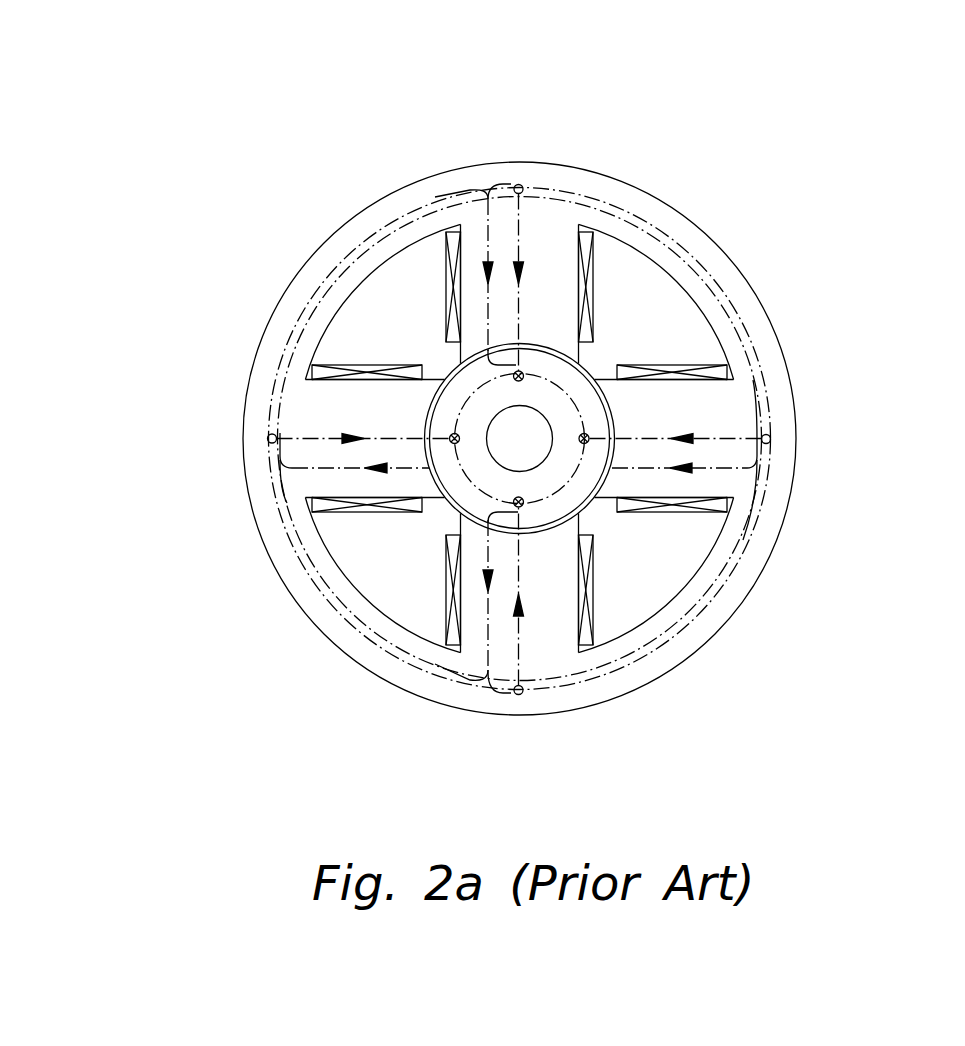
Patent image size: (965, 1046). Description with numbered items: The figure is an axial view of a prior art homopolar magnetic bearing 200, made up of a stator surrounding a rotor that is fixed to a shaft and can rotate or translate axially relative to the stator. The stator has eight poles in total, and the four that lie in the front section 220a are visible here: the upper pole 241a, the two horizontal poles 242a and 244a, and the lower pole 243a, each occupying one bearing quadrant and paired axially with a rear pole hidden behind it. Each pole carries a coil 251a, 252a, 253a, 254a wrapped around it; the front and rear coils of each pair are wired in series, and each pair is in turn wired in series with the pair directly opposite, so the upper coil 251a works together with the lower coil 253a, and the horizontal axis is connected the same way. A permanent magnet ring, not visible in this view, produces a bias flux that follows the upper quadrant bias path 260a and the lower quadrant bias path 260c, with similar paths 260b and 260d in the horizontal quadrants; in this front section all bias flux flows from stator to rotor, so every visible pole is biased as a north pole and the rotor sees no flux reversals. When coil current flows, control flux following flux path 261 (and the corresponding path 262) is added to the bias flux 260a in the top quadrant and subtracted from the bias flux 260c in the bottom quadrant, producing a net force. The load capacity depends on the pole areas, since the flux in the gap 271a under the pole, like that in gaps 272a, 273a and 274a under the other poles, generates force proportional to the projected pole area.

The bearing 200 is at (285, 143).
The front section 220a is at (601, 173).
The pole 241a is at (551, 272).
The pole 242a is at (700, 405).
The pole 243a is at (552, 605).
The pole 244a is at (341, 407).
The coil 251a is at (594, 293).
The coil 252a is at (724, 505).
The coil 253a is at (455, 593).
The coil 254a is at (352, 512).
The upper quadrant bias path 260a is at (518, 228).
The bias flux path 260b is at (735, 432).
The lower quadrant bias path 260c is at (519, 650).
The bias flux path 260d is at (302, 437).
The flux path 261 is at (738, 302).
The back iron flux path 262 is at (722, 590).
The gap 271a is at (480, 352).
The control flux path 272a is at (613, 457).
The control flux path 273a is at (553, 530).
The control flux path 274a is at (388, 470).